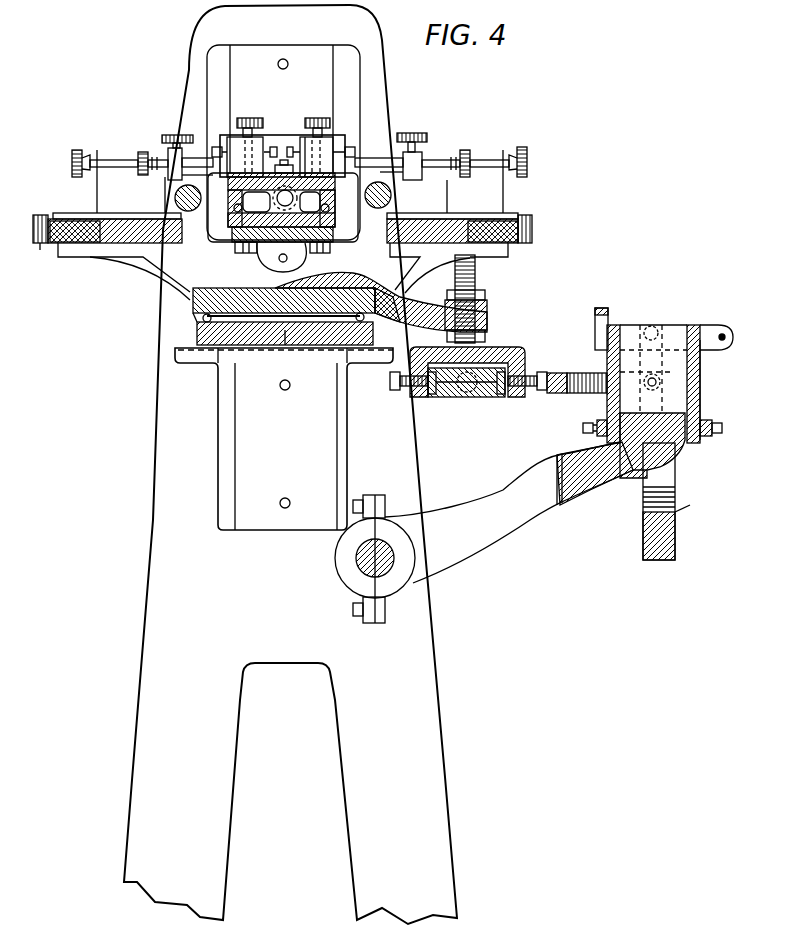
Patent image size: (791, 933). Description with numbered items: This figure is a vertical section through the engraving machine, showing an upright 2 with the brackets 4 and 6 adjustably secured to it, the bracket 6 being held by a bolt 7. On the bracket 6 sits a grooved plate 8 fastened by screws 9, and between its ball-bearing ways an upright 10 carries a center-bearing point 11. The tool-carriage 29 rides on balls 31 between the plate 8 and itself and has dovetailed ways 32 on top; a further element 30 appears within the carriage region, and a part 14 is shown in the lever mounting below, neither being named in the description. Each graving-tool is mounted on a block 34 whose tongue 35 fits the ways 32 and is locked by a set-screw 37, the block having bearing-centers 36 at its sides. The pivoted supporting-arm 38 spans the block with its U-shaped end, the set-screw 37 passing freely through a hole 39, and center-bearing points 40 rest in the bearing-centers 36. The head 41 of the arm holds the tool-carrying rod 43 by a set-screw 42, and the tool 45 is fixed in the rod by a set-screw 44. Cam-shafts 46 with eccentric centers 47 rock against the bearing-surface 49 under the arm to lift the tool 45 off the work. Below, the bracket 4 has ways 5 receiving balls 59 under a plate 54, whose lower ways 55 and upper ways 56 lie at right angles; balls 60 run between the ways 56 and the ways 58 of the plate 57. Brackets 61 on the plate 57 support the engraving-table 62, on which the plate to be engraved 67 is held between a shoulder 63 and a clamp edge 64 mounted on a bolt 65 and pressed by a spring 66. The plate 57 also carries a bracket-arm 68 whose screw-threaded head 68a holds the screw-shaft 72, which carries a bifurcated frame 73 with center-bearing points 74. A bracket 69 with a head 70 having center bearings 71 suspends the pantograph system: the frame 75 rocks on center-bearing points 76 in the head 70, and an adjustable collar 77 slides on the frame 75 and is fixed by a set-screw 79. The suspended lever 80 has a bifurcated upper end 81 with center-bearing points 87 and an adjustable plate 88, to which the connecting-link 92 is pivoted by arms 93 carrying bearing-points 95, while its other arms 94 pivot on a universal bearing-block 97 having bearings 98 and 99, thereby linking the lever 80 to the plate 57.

The upright 2 is at (431, 700).
The bracket 4 is at (220, 422).
The ways 5 is at (235, 356).
The adjustable bracket 6 is at (213, 93).
The bolt 7 is at (282, 58).
The plate 8 is at (232, 228).
The screw 9 is at (245, 253).
The upright 10 is at (275, 250).
The center-bearing point 11 is at (288, 258).
The shaft 14 is at (360, 560).
The tool-carriage 29 is at (347, 195).
The bushing 30 is at (323, 208).
The balls 31 is at (296, 226).
The dovetailed ways 32 is at (256, 199).
The block 34 is at (237, 145).
The tongue 35 is at (232, 195).
The bearing-center 36 is at (299, 161).
The set-screw 37 is at (316, 118).
The supporting-arm 38 is at (268, 136).
The hole 39 is at (306, 118).
The center-bearing point 40 is at (213, 148).
The head 41 is at (170, 150).
The set-screw 42 is at (176, 135).
The tool-carrying rod 43 is at (138, 158).
The set-screw 44 is at (76, 152).
The tool 45 is at (287, 181).
The cam-shaft 46 is at (192, 212).
The center 47 is at (234, 209).
The bearing-surface 49 is at (183, 178).
The plate 54 is at (285, 345).
The ball-bearing ways 55 is at (374, 333).
The ball-bearing ways 56 is at (200, 322).
The plate 57 is at (223, 285).
The ball-bearing ways 58 is at (203, 318).
The balls 59 is at (215, 350).
The balls 60 is at (198, 320).
The bracket 61 is at (138, 262).
The engraving-table 62 is at (110, 257).
The shoulder 63 is at (170, 214).
The clamp edge 64 is at (40, 215).
The bolt 65 is at (40, 245).
The spring 66 is at (70, 244).
The plate to be engraved 67 is at (112, 219).
The bracket-arm 68 is at (435, 312).
The screw-threaded head 68a is at (487, 315).
The bracket 69 is at (484, 555).
The head 70 is at (682, 448).
The center bearing 71 is at (634, 474).
The screw-shaft 72 is at (476, 270).
The bifurcated frame 73 is at (515, 347).
The center-bearing point 74 is at (545, 378).
The frame 75 is at (700, 380).
The center-bearing point 76 is at (725, 428).
The adjustable collar 77 is at (706, 325).
The set-screw 79 is at (725, 337).
The suspended lever 80 is at (643, 555).
The bifurcated upper end 81 is at (643, 507).
The center-bearing point 87 is at (649, 326).
The adjustable plate 88 is at (691, 499).
The connecting-link 92 is at (556, 393).
The arm 93 is at (600, 374).
The arm 94 is at (488, 398).
The bearing-point 95 is at (658, 380).
The universal bearing-block 97 is at (468, 398).
The bearing 98 is at (432, 398).
The bearing 99 is at (456, 398).